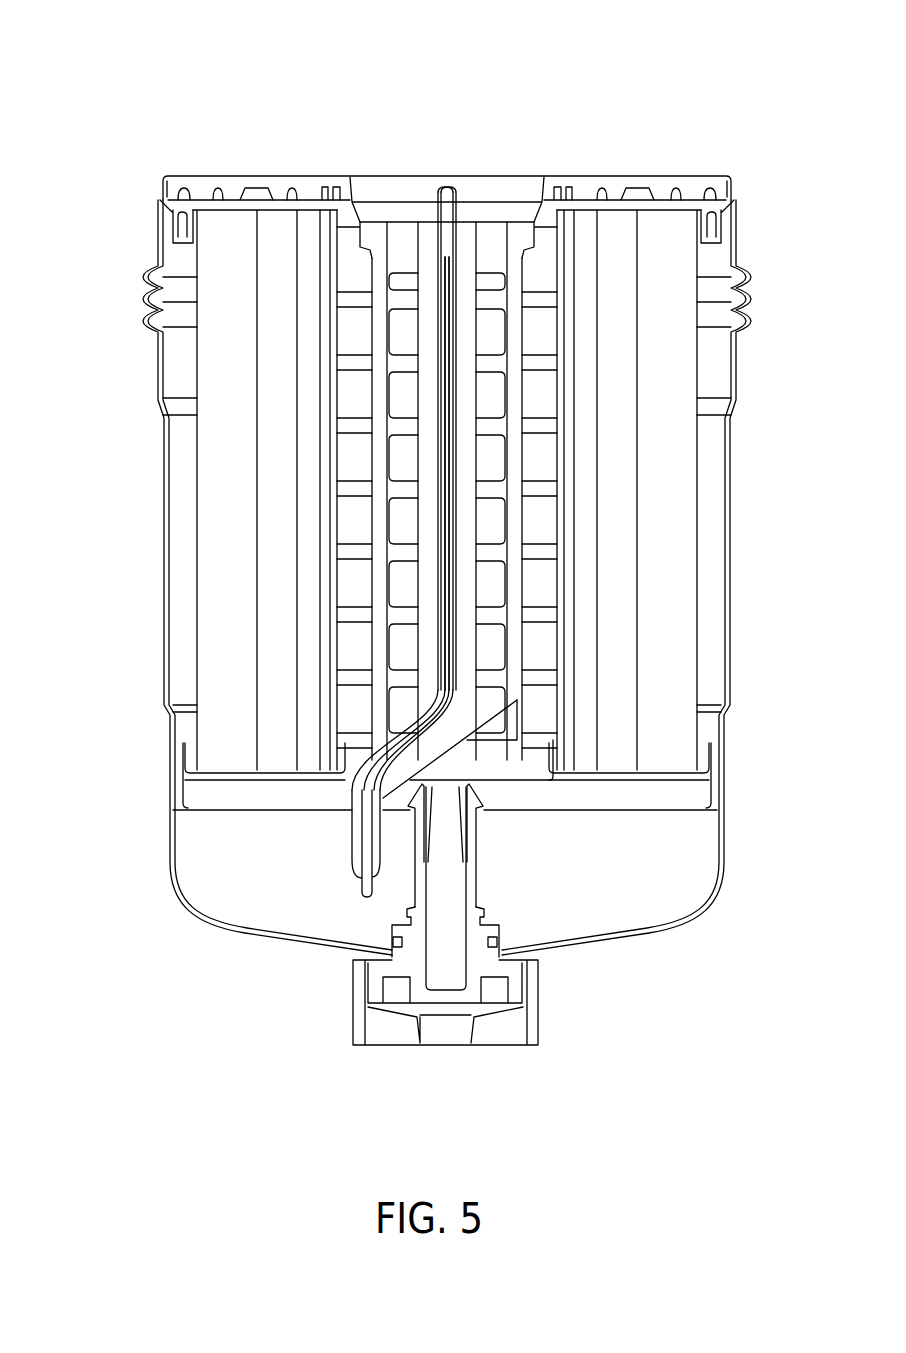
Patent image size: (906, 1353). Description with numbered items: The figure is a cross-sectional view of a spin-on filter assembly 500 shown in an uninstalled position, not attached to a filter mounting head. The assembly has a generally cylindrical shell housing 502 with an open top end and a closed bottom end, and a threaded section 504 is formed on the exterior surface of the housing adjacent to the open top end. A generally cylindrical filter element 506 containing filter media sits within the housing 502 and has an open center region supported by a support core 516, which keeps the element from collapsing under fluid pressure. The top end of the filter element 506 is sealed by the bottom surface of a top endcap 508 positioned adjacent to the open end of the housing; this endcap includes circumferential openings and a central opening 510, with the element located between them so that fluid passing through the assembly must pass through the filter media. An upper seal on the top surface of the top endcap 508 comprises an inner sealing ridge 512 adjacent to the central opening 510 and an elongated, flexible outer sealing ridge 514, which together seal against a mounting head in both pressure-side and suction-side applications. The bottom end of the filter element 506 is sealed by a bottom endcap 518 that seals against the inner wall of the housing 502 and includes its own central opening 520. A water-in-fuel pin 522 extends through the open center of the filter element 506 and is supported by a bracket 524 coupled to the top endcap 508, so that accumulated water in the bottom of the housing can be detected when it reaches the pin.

The spin-on filter assembly 500 is at (143, 70).
The housing 502 is at (170, 377).
The threaded section 504 is at (170, 288).
The filter element 506 is at (210, 445).
The top endcap 508 is at (278, 186).
The central opening 510 is at (476, 156).
The inner sealing ridge 512 is at (364, 184).
The outer sealing ridge 514 is at (156, 184).
The support core 516 is at (343, 553).
The bottom endcap 518 is at (210, 788).
The central opening 520 is at (532, 780).
The WIF pin 522 is at (372, 882).
The bracket 524 is at (388, 718).